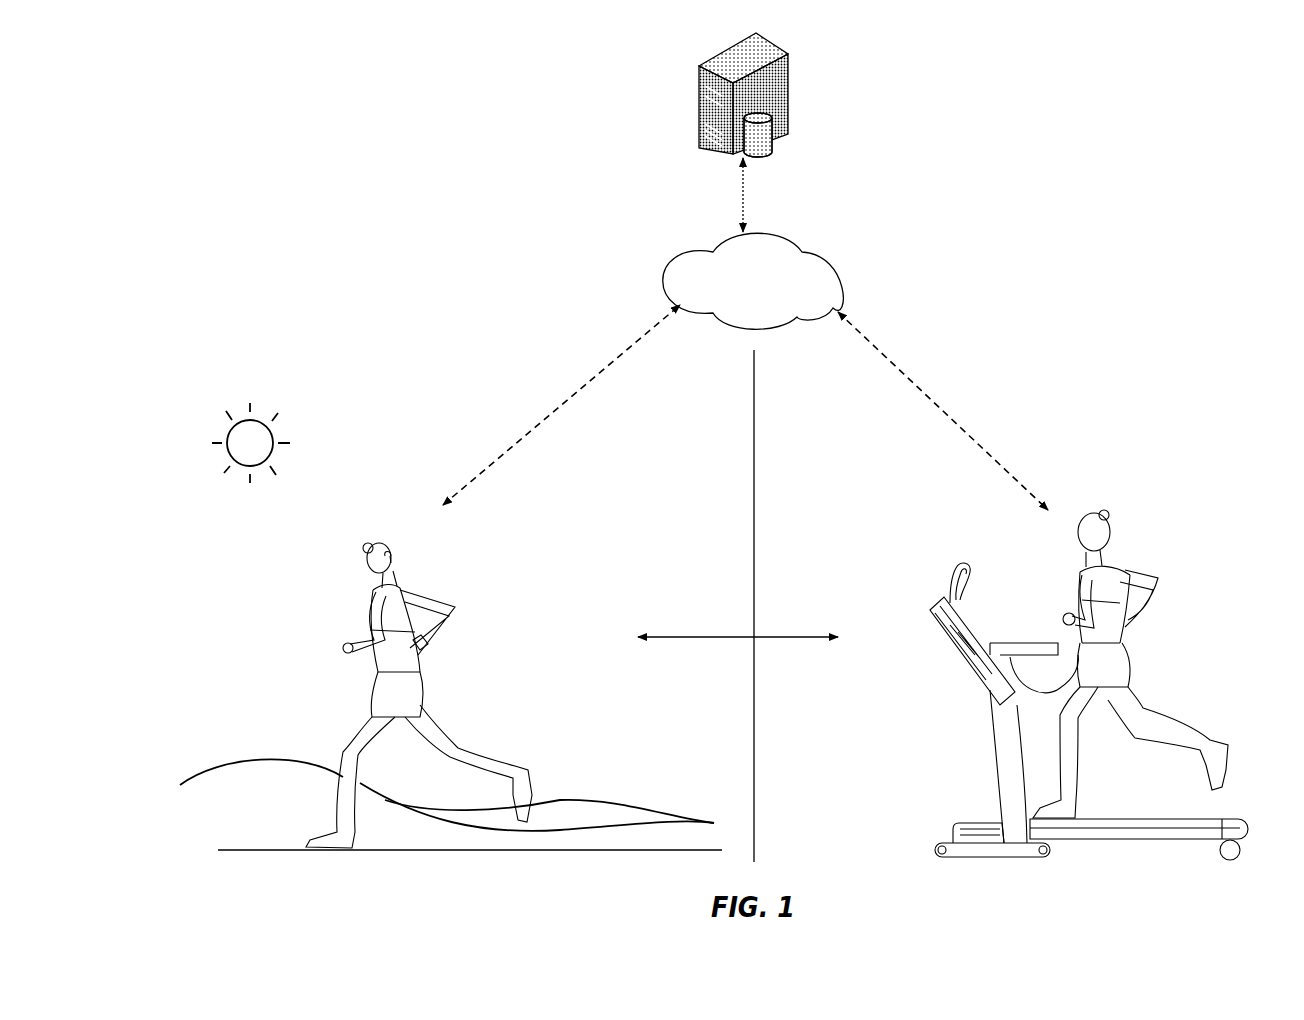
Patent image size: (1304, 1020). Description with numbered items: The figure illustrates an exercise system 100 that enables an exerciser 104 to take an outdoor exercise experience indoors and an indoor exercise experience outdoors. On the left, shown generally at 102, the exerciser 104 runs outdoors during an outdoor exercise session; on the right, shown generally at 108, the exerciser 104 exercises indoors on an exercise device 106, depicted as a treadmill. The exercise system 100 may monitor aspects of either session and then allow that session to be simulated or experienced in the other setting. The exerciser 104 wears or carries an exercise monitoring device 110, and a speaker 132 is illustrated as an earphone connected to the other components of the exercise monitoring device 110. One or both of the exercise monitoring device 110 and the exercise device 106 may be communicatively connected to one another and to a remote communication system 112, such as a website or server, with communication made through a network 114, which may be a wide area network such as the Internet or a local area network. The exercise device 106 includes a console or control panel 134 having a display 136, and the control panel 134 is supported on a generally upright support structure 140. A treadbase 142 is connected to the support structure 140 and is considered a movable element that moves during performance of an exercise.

The exercise system 100 is at (1096, 141).
The outdoor exercise session 102 is at (350, 420).
The exerciser 104 is at (378, 546).
The exercise device 106 is at (992, 738).
The indoor exercise session 108 is at (1174, 419).
The exercise monitoring device 110 is at (426, 634).
The remote communication system 112 is at (790, 99).
The network 114 is at (753, 281).
The speaker 132 is at (394, 558).
The console or control panel 134 is at (947, 595).
The display 136 is at (986, 604).
The support structure 140 is at (1005, 776).
The treadbase 142 is at (1148, 838).